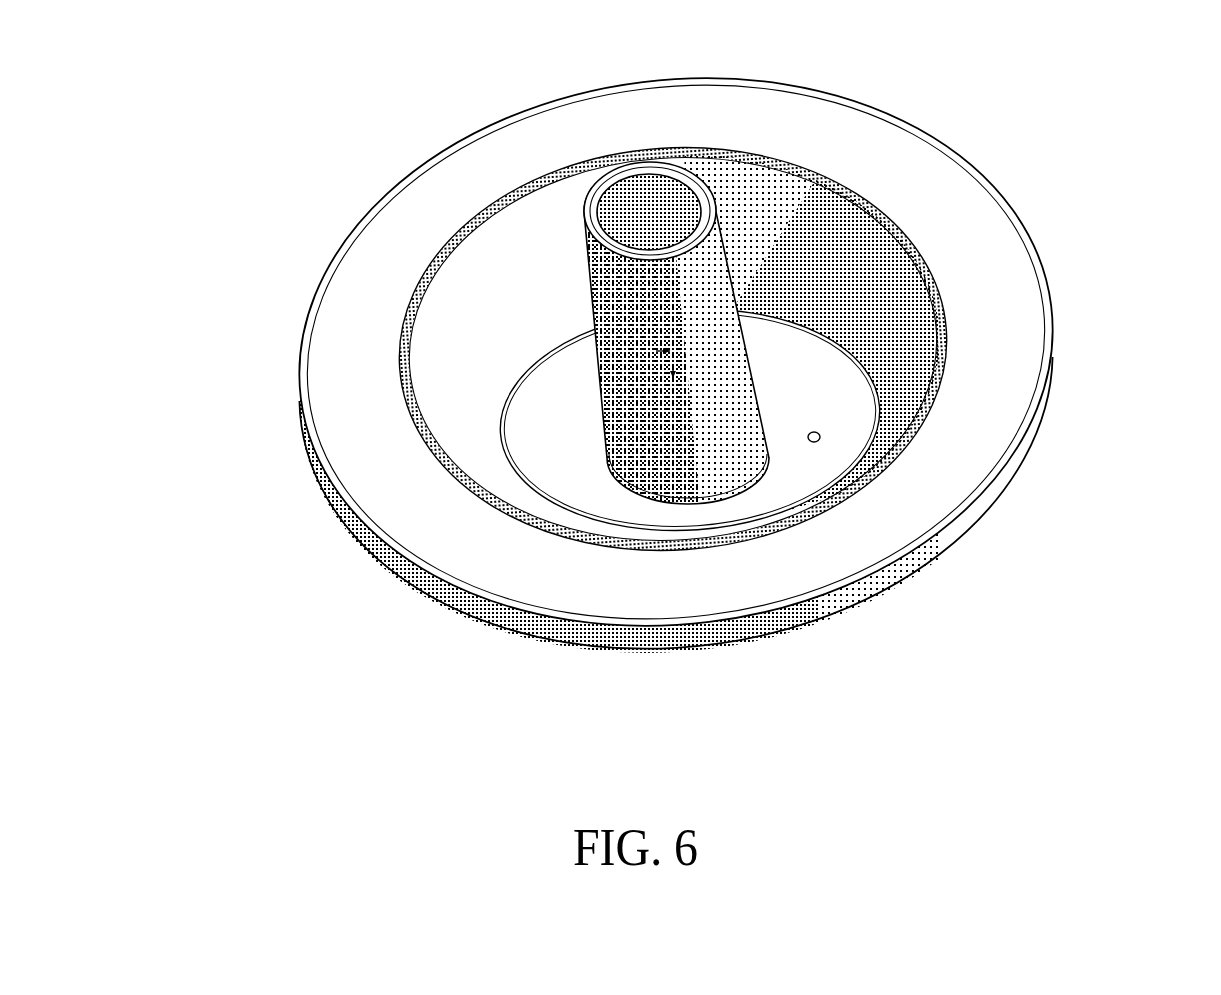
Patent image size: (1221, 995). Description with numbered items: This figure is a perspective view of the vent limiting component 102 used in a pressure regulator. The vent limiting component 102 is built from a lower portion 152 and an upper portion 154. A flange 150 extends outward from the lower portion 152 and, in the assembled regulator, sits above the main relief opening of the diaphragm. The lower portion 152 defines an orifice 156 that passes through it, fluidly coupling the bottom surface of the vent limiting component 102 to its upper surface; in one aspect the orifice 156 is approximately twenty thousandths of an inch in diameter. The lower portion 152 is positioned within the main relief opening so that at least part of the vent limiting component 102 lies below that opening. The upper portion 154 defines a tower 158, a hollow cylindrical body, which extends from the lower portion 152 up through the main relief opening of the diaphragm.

The vent limiting component 102 is at (326, 88).
The flange 150 is at (942, 180).
The lower portion 152 is at (888, 342).
The upper portion 154 is at (703, 255).
The orifice 156 is at (823, 435).
The tower 158 is at (697, 357).